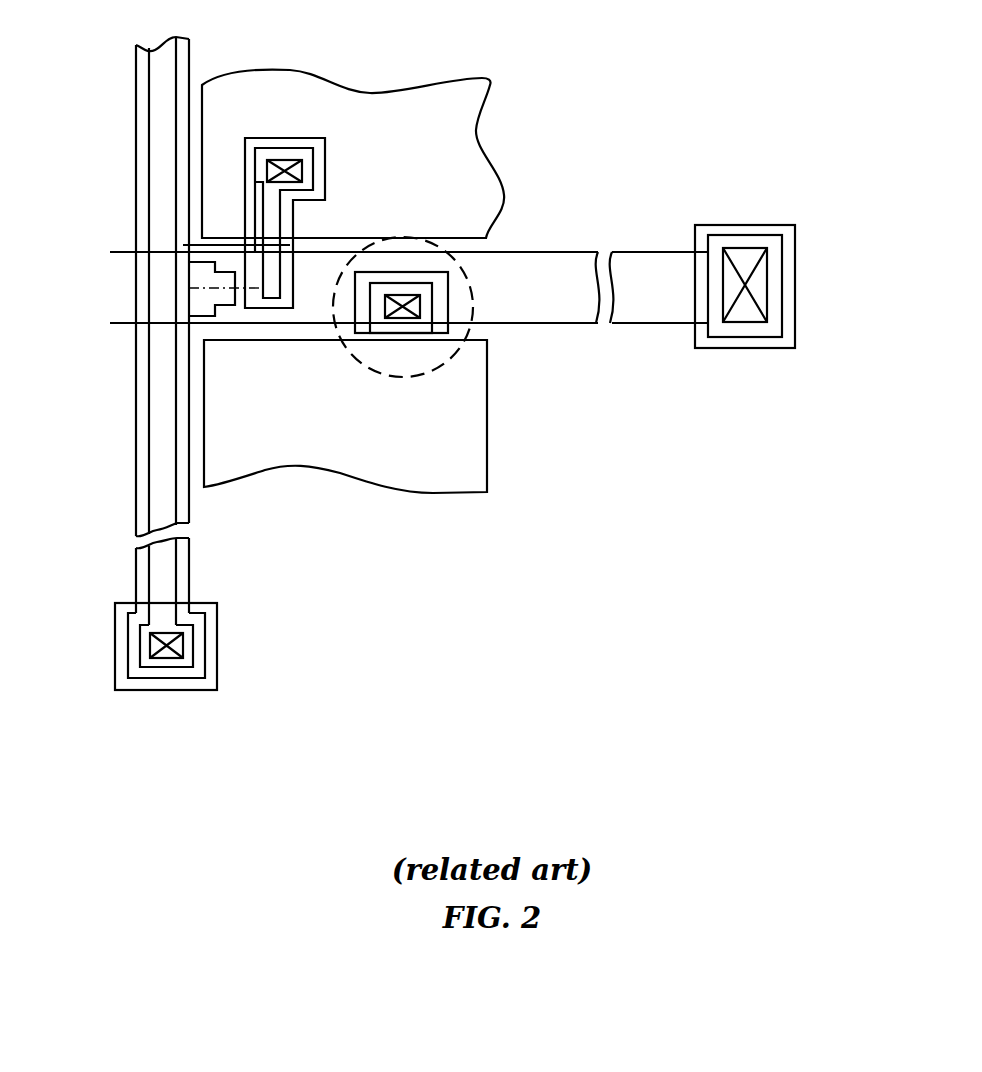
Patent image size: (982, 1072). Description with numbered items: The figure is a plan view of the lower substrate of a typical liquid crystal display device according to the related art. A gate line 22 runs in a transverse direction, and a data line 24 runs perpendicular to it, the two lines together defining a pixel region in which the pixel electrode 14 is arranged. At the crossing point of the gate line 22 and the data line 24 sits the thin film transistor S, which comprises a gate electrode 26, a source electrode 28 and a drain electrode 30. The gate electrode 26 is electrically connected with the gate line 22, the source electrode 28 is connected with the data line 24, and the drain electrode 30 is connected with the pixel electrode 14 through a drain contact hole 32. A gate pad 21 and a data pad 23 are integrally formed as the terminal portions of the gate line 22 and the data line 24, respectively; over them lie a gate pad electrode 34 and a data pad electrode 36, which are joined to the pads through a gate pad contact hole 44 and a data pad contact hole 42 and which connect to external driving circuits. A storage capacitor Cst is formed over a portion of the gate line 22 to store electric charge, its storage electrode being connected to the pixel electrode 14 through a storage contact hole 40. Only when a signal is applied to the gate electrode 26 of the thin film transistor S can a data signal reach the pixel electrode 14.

The pixel electrode 14 is at (475, 135).
The gate pad 21 is at (775, 278).
The gate line 22 is at (656, 258).
The data pad 23 is at (192, 662).
The data line 24 is at (160, 142).
The gate electrode 26 is at (165, 322).
The source electrode 28 is at (178, 266).
The drain electrode 30 is at (225, 330).
The drain contact hole 32 is at (300, 168).
The gate pad electrode 34 is at (780, 225).
The data pad electrode 36 is at (218, 607).
The storage contact hole 40 is at (422, 302).
The data pad contact hole 42 is at (738, 248).
The gate pad contact hole 44 is at (188, 647).
The thin film transistor S is at (175, 290).
The storage capacitor Cst is at (423, 375).